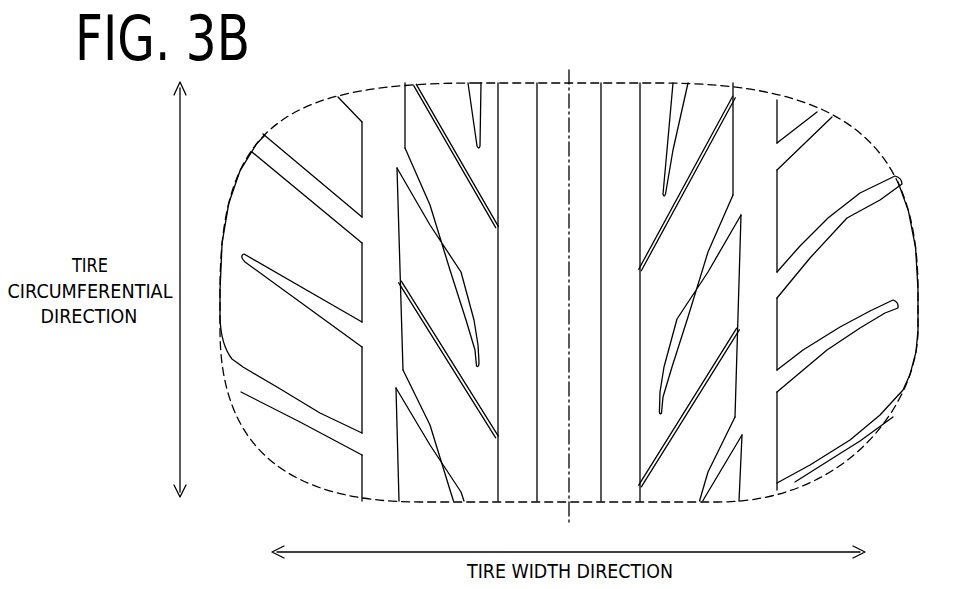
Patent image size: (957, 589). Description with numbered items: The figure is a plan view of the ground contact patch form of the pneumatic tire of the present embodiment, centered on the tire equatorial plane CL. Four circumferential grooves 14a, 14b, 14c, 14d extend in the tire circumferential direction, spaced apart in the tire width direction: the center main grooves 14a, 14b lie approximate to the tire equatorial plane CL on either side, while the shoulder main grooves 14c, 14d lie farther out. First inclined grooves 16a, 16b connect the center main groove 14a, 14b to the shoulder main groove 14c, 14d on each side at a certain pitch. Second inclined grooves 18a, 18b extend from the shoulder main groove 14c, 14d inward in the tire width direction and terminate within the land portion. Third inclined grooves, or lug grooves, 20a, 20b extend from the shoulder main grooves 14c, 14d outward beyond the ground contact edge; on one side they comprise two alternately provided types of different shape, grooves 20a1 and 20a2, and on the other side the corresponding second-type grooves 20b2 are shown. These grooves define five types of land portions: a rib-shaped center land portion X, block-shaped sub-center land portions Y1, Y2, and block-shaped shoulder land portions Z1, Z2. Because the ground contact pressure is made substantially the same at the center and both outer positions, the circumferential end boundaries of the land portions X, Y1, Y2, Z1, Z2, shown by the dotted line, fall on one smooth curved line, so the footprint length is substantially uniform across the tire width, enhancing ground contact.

The circumferential groove (center main groove) 14a is at (517, 115).
The circumferential groove (center main groove) 14b is at (621, 115).
The circumferential groove (shoulder main groove) 14c is at (380, 120).
The circumferential groove (shoulder main groove) 14d is at (759, 120).
The first inclined groove 16a is at (470, 190).
The first inclined groove 16b is at (670, 243).
The second inclined groove 18a is at (438, 243).
The second inclined groove 18b is at (707, 287).
The third inclined groove (lug groove) 20a is at (302, 251).
The third inclined groove of first type 20a1 is at (296, 168).
The third inclined groove of second type 20a2 is at (295, 283).
The third inclined groove (lug groove) 20b is at (840, 265).
The third inclined groove of second type 20b2 is at (873, 302).
The tire equatorial plane CL is at (570, 281).
The center land portion X is at (584, 477).
The sub-center land portion Y1 is at (477, 473).
The sub-center land portion Y2 is at (660, 480).
The shoulder land portion Z1 is at (313, 442).
The shoulder land portion Z2 is at (852, 390).